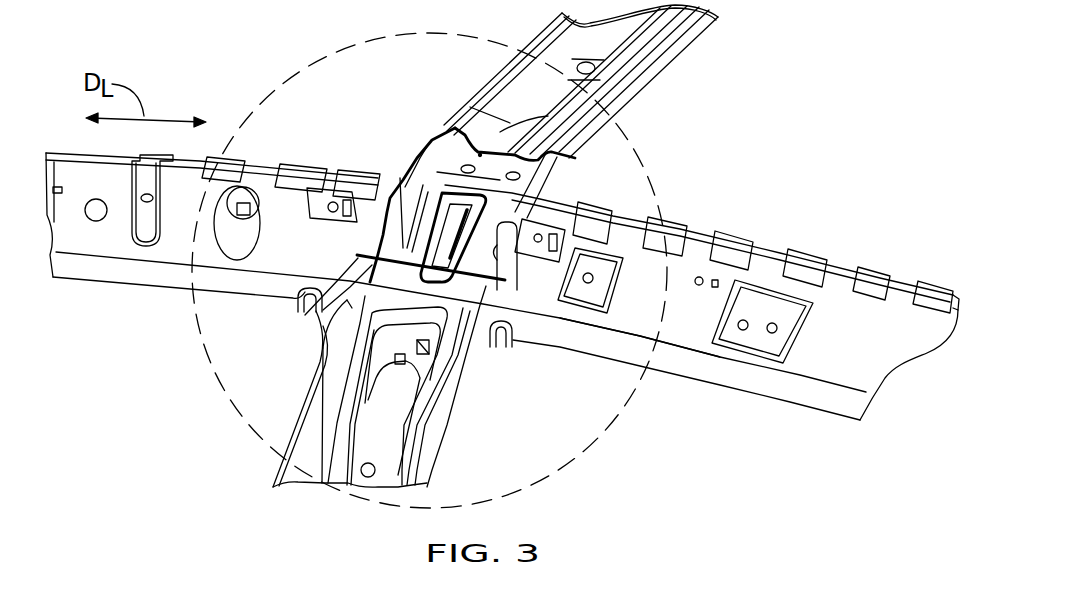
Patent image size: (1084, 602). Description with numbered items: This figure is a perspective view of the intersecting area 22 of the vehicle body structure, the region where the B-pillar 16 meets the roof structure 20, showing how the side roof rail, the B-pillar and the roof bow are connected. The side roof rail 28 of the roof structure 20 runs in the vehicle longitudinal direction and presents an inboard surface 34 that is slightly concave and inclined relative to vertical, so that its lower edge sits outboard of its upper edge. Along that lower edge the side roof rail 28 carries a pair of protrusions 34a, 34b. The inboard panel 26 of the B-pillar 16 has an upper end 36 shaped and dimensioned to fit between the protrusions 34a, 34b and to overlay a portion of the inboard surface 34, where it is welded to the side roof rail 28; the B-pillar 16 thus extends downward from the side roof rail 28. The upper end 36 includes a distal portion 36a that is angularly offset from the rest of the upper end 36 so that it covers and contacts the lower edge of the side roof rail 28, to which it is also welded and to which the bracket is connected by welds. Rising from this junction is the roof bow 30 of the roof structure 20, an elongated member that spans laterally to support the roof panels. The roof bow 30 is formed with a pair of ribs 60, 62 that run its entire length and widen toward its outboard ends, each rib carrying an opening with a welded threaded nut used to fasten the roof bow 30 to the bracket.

The B-pillar 16 is at (399, 386).
The roof structure 20 is at (502, 286).
The intersecting area 22 is at (656, 150).
The inboard panel 26 is at (382, 442).
The side roof rail 28 is at (870, 348).
The roof bow 30 is at (680, 52).
The inboard surface 34 is at (685, 325).
The protrusion 34a is at (308, 308).
The protrusion 34b is at (498, 340).
The upper end 36 is at (323, 348).
The distal portion 36a is at (363, 266).
The rib 60 is at (497, 140).
The rib 62 is at (540, 152).